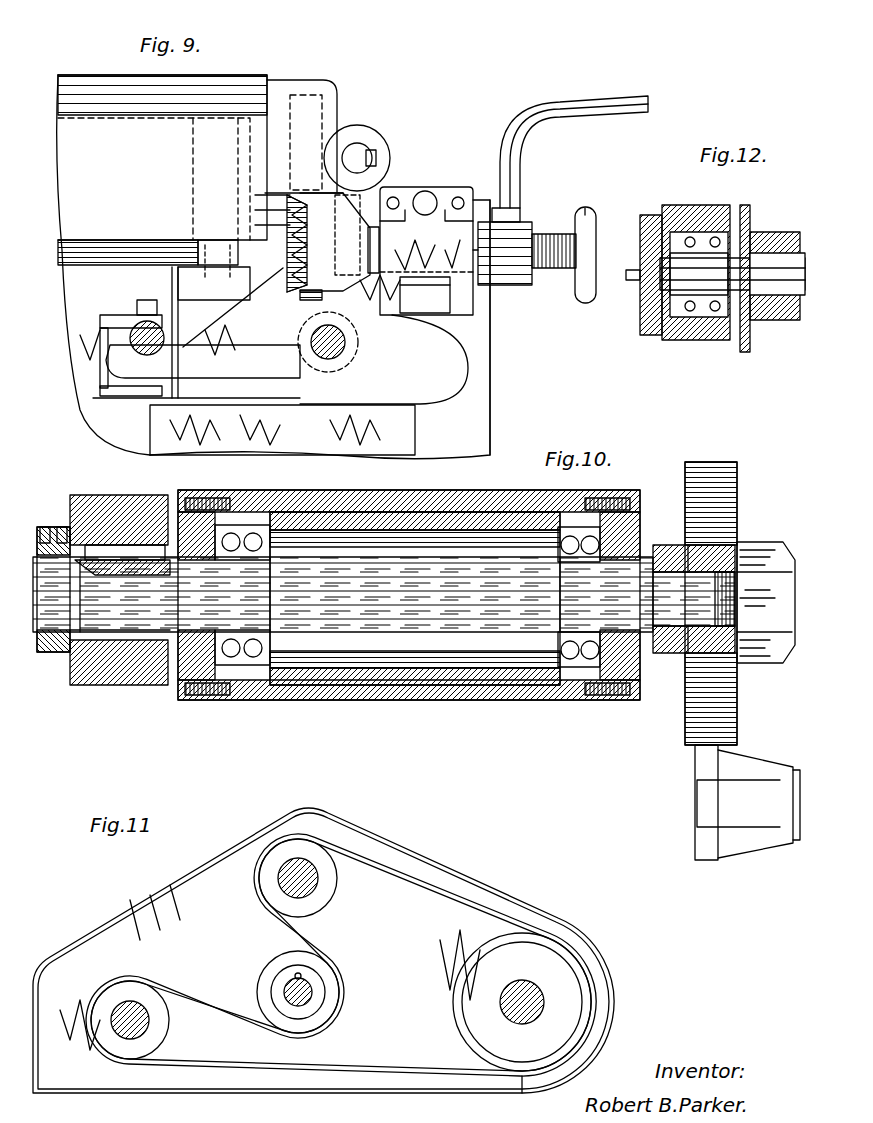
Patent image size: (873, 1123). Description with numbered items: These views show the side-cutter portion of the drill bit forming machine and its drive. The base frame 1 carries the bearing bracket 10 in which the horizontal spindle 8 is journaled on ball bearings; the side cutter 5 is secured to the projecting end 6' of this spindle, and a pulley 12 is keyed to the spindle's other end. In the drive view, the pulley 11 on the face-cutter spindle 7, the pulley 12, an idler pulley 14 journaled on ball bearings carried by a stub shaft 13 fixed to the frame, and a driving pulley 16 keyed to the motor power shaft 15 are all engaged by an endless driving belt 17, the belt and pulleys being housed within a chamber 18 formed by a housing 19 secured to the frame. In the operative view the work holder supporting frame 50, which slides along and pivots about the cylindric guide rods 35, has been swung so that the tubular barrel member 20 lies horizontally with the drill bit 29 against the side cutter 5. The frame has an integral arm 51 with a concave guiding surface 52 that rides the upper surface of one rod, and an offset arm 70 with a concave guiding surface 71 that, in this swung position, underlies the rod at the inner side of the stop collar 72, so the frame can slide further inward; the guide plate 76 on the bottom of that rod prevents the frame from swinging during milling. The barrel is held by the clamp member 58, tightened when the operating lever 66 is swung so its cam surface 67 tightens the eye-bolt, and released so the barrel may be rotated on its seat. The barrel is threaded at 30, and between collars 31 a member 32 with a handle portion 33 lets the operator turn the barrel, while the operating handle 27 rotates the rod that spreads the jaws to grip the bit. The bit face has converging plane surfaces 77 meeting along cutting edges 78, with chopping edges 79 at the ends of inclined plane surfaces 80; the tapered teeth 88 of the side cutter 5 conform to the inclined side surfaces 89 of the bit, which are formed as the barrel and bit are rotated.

In FIG. 9, the base frame 1 is at (470, 372).
In FIG. 9, the side cutter 5 is at (240, 275).
In FIG. 10, the side cutter 5 is at (740, 540).
In FIG. 10, the projecting end of spindle 6' is at (770, 572).
In FIG. 11, the horizontal spindle 7 is at (120, 1030).
In FIG. 10, the horizontal spindle 8 is at (410, 625).
In FIG. 11, the horizontal spindle 8 is at (280, 878).
In FIG. 9, the bearing bracket 10 is at (115, 268).
In FIG. 10, the bearing bracket 10 is at (275, 690).
In FIG. 11, the pulley 11 is at (170, 1018).
In FIG. 10, the pulley 12 is at (130, 690).
In FIG. 11, the pulley 12 is at (330, 862).
In FIG. 12, the stub shaft 13 is at (758, 238).
In FIG. 11, the stub shaft 13 is at (320, 990).
In FIG. 12, the idler pulley 14 is at (680, 212).
In FIG. 11, the idler pulley 14 is at (272, 968).
In FIG. 11, the power shaft 15 is at (535, 985).
In FIG. 11, the driving pulley 16 is at (510, 950).
In FIG. 11, the endless driving belt 17 is at (410, 860).
In FIG. 11, the chamber 18 is at (90, 930).
In FIG. 11, the housing 19 is at (145, 890).
In FIG. 9, the tubular barrel member 20 is at (555, 235).
In FIG. 9, the operating handle 27 is at (585, 212).
In FIG. 9, the drill bit 29 is at (372, 235).
In FIG. 10, the drill bit 29 is at (752, 768).
In FIG. 9, the threaded portion of barrel 30 is at (560, 280).
In FIG. 9, the collars 31 is at (505, 285).
In FIG. 9, the member 32 is at (515, 228).
In FIG. 9, the handle portion 33 is at (598, 104).
In FIG. 9, the cylindric guide rods 35 is at (105, 330).
In FIG. 9, the work holder supporting frame 50 is at (490, 345).
In FIG. 9, the arm 51 is at (376, 160).
In FIG. 9, the concave guiding surface 52 is at (372, 128).
In FIG. 9, the clamp member 58 is at (395, 300).
In FIG. 9, the operating lever 66 is at (427, 200).
In FIG. 9, the cam surface 67 is at (460, 190).
In FIG. 9, the arm 70 is at (200, 370).
In FIG. 9, the concave guiding surface 71 is at (140, 350).
In FIG. 9, the stop collar 72 is at (233, 307).
In FIG. 9, the guide plate 76 is at (130, 283).
In FIG. 9, the converging plane surfaces 77 is at (275, 218).
In FIG. 10, the converging plane surfaces 77 is at (700, 852).
In FIG. 9, the cutting edges 78 is at (262, 235).
In FIG. 10, the cutting edges 78 is at (698, 838).
In FIG. 9, the chopping edges 79 is at (295, 200).
In FIG. 10, the chopping edges 79 is at (698, 808).
In FIG. 9, the inclined plane surfaces 80 is at (320, 282).
In FIG. 9, the tapered teeth 88 is at (280, 205).
In FIG. 10, the tapered teeth 88 is at (725, 462).
In FIG. 9, the inclined side surfaces 89 is at (315, 200).
In FIG. 10, the inclined side surfaces 89 is at (705, 860).